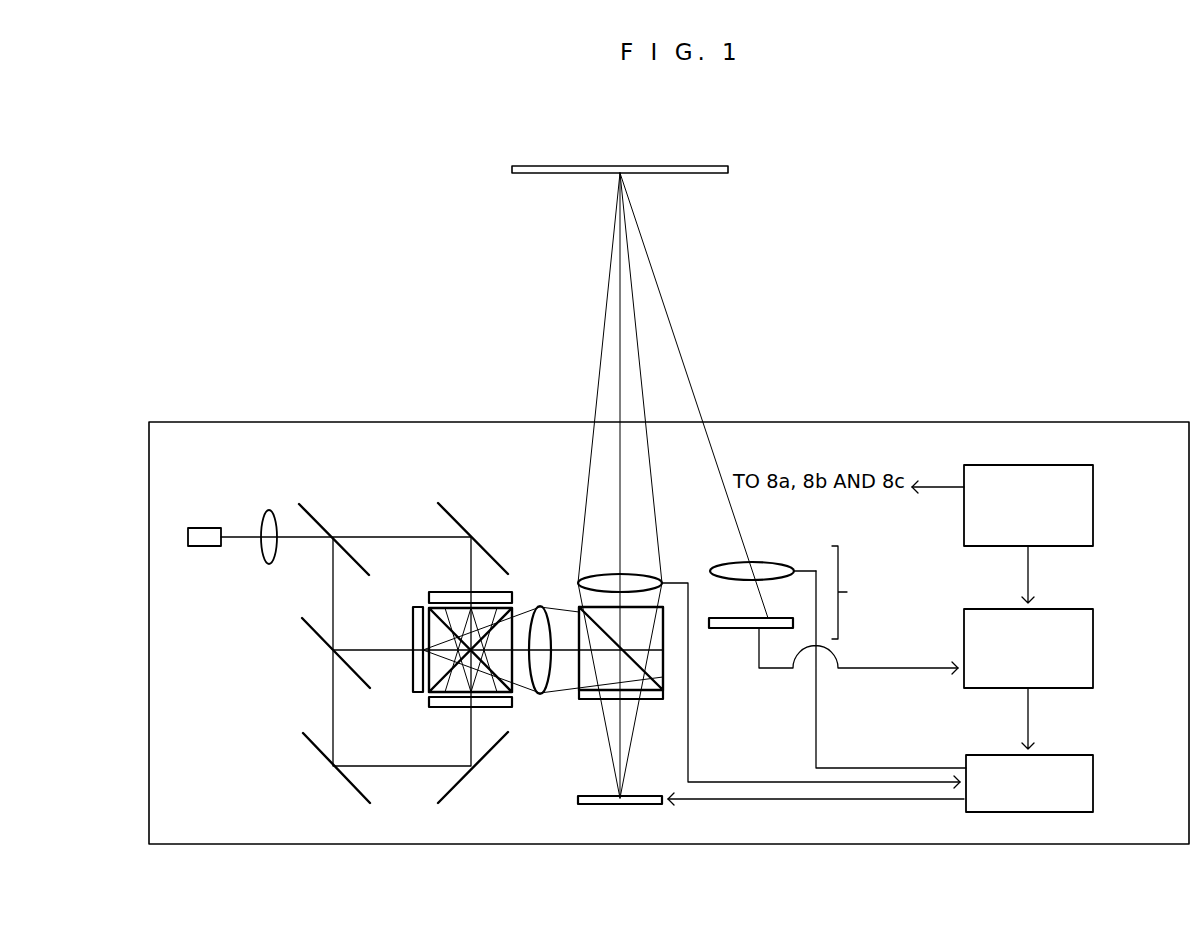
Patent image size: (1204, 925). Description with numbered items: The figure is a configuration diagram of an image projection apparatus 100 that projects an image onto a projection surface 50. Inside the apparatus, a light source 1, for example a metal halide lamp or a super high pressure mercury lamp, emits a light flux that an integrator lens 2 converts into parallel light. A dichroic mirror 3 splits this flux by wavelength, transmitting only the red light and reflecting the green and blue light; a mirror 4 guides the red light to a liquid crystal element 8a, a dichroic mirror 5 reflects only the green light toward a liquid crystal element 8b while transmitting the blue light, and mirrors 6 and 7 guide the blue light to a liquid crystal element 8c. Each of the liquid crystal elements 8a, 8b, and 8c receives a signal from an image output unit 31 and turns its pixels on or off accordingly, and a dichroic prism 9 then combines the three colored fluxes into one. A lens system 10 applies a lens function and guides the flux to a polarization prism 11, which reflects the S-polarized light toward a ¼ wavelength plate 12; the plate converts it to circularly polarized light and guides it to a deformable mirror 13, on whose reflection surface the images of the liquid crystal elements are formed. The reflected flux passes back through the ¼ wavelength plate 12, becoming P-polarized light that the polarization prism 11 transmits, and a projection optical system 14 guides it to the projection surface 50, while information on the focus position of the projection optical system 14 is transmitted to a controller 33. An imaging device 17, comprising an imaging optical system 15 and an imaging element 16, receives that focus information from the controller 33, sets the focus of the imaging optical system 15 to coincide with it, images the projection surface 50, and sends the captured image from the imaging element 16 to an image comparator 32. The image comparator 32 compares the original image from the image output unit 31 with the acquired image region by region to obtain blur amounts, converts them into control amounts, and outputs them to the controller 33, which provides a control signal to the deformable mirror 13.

The light source 1 is at (206, 528).
The integrator lens 2 is at (269, 510).
The dichroic mirror 3 is at (310, 510).
The mirror 4 is at (451, 510).
The dichroic mirror 5 is at (302, 618).
The mirror 6 is at (303, 733).
The mirror 7 is at (460, 782).
The liquid crystal element 8a is at (440, 592).
The liquid crystal element 8b is at (413, 618).
The liquid crystal element 8c is at (441, 707).
The dichroic prism 9 is at (512, 697).
The lens system 10 is at (540, 606).
The polarization prism 11 is at (580, 607).
The ¼ wavelength plate 12 is at (586, 699).
The deformable mirror 13 is at (625, 804).
The projection optical system 14 is at (660, 575).
The imaging optical system 15 is at (778, 563).
The imaging element 16 is at (727, 630).
The imaging device 17 is at (857, 592).
The image output unit 31 is at (1093, 483).
The image comparator 32 is at (1093, 623).
The controller 33 is at (1093, 766).
The projection surface 50 is at (512, 170).
The image projection apparatus 100 is at (876, 422).